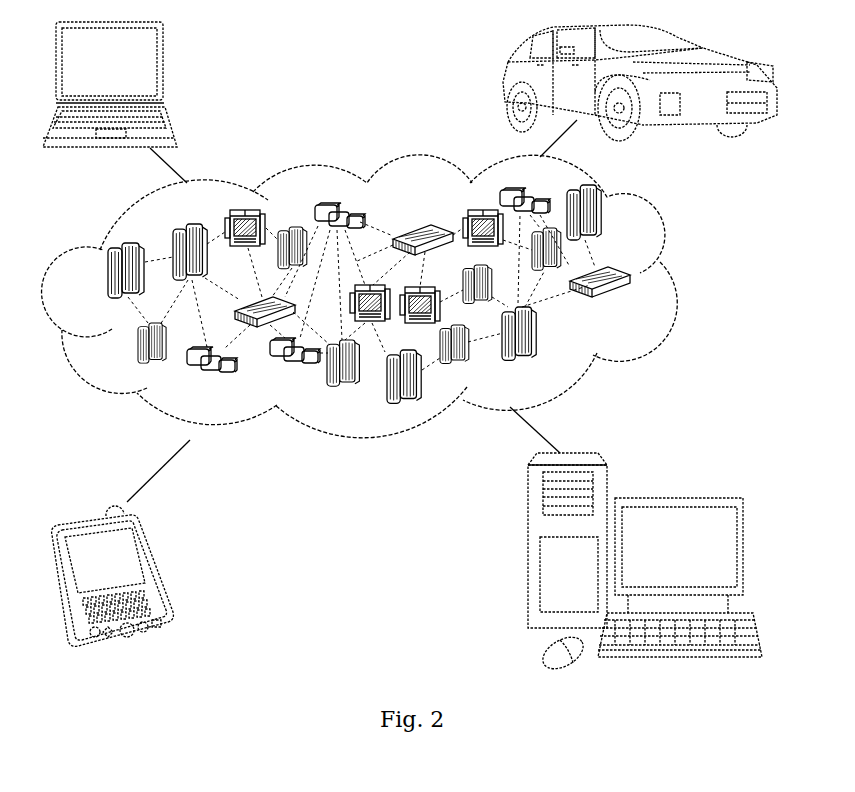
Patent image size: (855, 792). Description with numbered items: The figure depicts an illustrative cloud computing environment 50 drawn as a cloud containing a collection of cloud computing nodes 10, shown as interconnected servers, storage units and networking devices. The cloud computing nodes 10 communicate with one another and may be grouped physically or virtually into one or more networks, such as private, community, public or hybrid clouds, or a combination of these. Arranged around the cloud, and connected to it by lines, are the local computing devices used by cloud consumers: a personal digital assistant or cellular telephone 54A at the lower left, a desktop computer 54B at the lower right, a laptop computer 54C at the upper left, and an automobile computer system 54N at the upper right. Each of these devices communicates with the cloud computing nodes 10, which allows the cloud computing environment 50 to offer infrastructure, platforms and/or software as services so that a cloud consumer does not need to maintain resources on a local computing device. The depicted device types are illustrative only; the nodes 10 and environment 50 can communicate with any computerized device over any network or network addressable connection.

The cloud computing nodes 10 is at (633, 302).
The cloud computing environment 50 is at (678, 277).
The personal digital assistant or cellular telephone 54A is at (155, 570).
The desktop computer 54B is at (677, 498).
The laptop computer 54C is at (165, 68).
The automobile computer system 54N is at (505, 82).